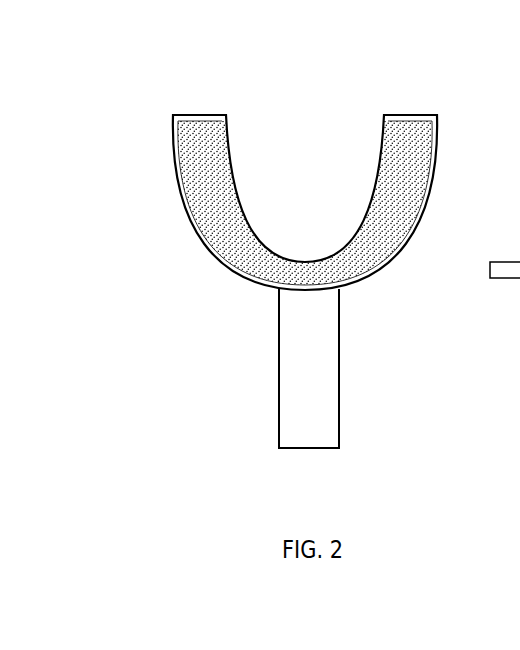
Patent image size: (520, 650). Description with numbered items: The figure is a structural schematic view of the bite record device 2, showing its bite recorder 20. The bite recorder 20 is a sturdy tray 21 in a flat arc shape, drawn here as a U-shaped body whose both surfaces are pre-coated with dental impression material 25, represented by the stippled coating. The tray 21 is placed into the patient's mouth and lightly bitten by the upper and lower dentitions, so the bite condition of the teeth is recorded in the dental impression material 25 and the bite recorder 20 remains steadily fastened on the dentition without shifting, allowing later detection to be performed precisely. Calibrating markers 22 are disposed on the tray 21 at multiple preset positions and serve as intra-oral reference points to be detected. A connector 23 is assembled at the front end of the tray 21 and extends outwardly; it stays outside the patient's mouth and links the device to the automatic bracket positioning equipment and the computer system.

The bite record device 2 is at (298, 84).
The bite recorder 20 is at (317, 165).
The tray 21 is at (431, 184).
The calibrating markers 22 is at (173, 135).
The connector 23 is at (327, 360).
The dental impression material 25 is at (408, 212).